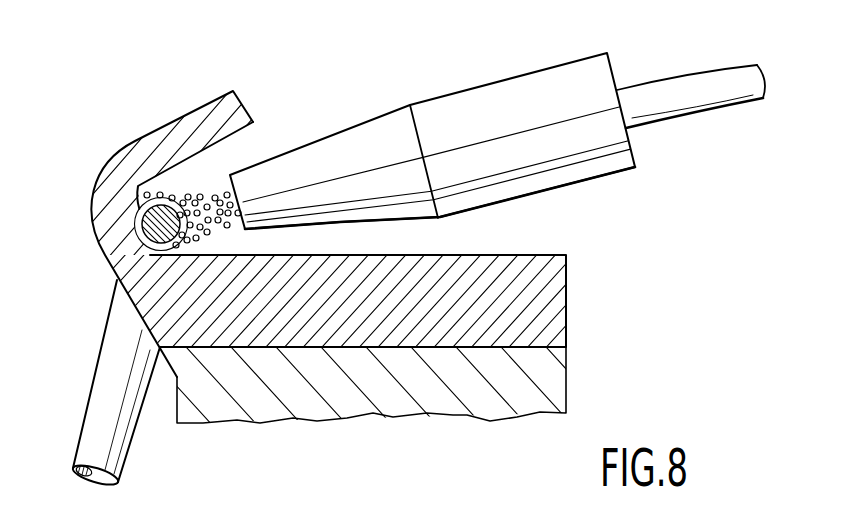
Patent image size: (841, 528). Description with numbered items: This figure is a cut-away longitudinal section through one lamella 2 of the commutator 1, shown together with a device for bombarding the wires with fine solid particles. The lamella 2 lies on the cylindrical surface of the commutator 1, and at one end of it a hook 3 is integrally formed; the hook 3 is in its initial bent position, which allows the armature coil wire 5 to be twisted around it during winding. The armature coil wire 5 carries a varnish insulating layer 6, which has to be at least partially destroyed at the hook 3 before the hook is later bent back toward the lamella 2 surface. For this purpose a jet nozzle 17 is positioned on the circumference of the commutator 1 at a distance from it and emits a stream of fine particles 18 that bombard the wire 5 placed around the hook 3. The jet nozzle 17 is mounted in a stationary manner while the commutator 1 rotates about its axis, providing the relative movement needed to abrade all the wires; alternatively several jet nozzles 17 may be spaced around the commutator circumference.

The commutator 1 is at (521, 252).
The lamella 2 is at (545, 308).
The hook 3 is at (167, 145).
The armature coil wire 5 is at (140, 242).
The varnish insulating layer 6 is at (135, 207).
The jet nozzle 17 is at (373, 130).
The fine particles 18 is at (202, 193).